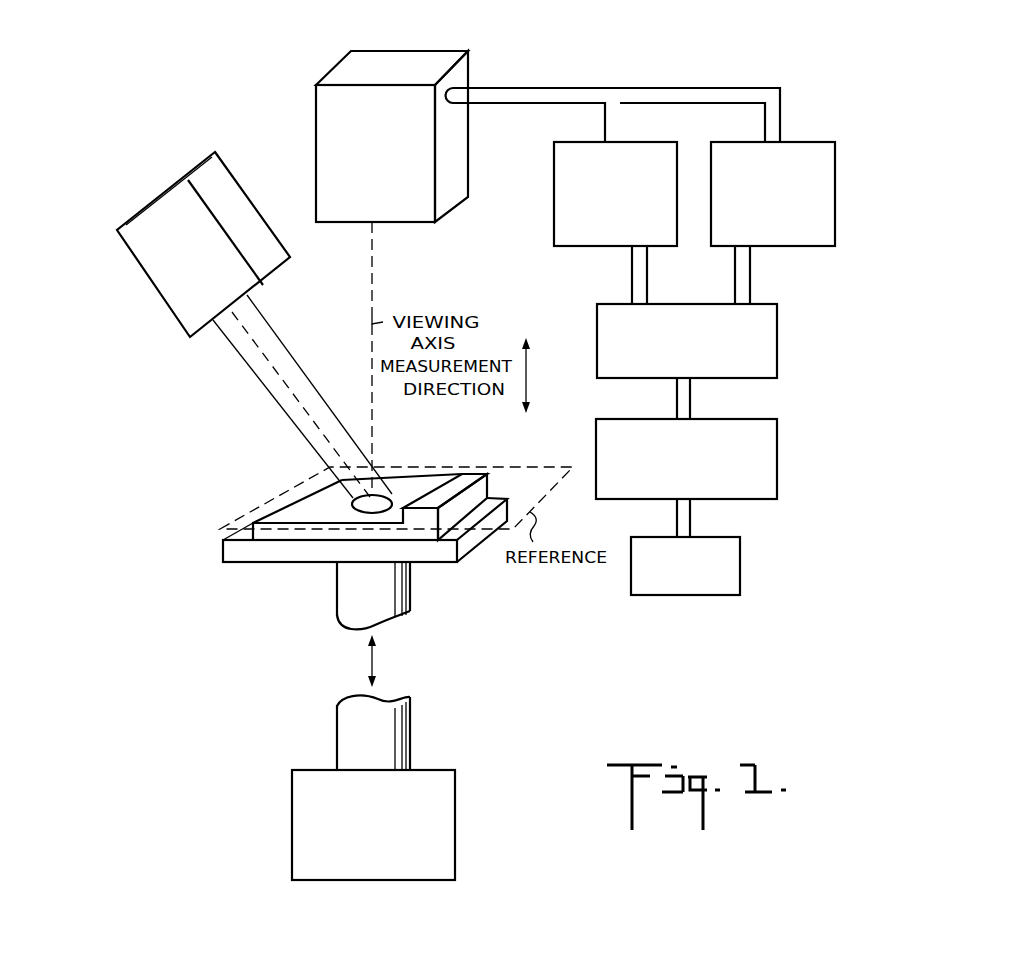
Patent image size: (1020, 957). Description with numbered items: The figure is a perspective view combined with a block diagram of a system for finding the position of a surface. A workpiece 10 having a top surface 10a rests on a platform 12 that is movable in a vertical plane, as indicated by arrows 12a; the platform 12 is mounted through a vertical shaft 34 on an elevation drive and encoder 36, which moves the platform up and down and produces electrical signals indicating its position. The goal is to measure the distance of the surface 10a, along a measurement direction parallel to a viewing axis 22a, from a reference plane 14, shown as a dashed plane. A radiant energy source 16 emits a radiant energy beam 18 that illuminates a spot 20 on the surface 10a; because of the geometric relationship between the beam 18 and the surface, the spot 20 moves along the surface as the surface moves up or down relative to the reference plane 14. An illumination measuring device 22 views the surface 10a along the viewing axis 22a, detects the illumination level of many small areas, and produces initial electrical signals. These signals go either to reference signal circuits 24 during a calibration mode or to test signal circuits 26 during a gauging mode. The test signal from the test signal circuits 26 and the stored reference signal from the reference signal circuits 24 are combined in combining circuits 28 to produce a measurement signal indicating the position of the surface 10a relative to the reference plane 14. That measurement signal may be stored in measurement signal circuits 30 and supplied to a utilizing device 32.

The workpiece 10 is at (380, 537).
The top surface 10a is at (341, 515).
The platform 12 is at (440, 572).
The arrows 12a is at (372, 667).
The reference plane 14 is at (528, 463).
The radiant energy source 16 is at (240, 176).
The radiant energy beam 18 is at (291, 341).
The spot 20 is at (393, 492).
The illumination measuring device 22 is at (403, 48).
The viewing axis 22a is at (375, 279).
The reference signal circuits 24 is at (797, 145).
The test signal circuits 26 is at (633, 145).
The combining circuits 28 is at (762, 305).
The measurement signal circuits 30 is at (755, 422).
The utilizing device 32 is at (733, 538).
The vertical shaft 34 is at (416, 620).
The elevation drive and encoder 36 is at (453, 784).